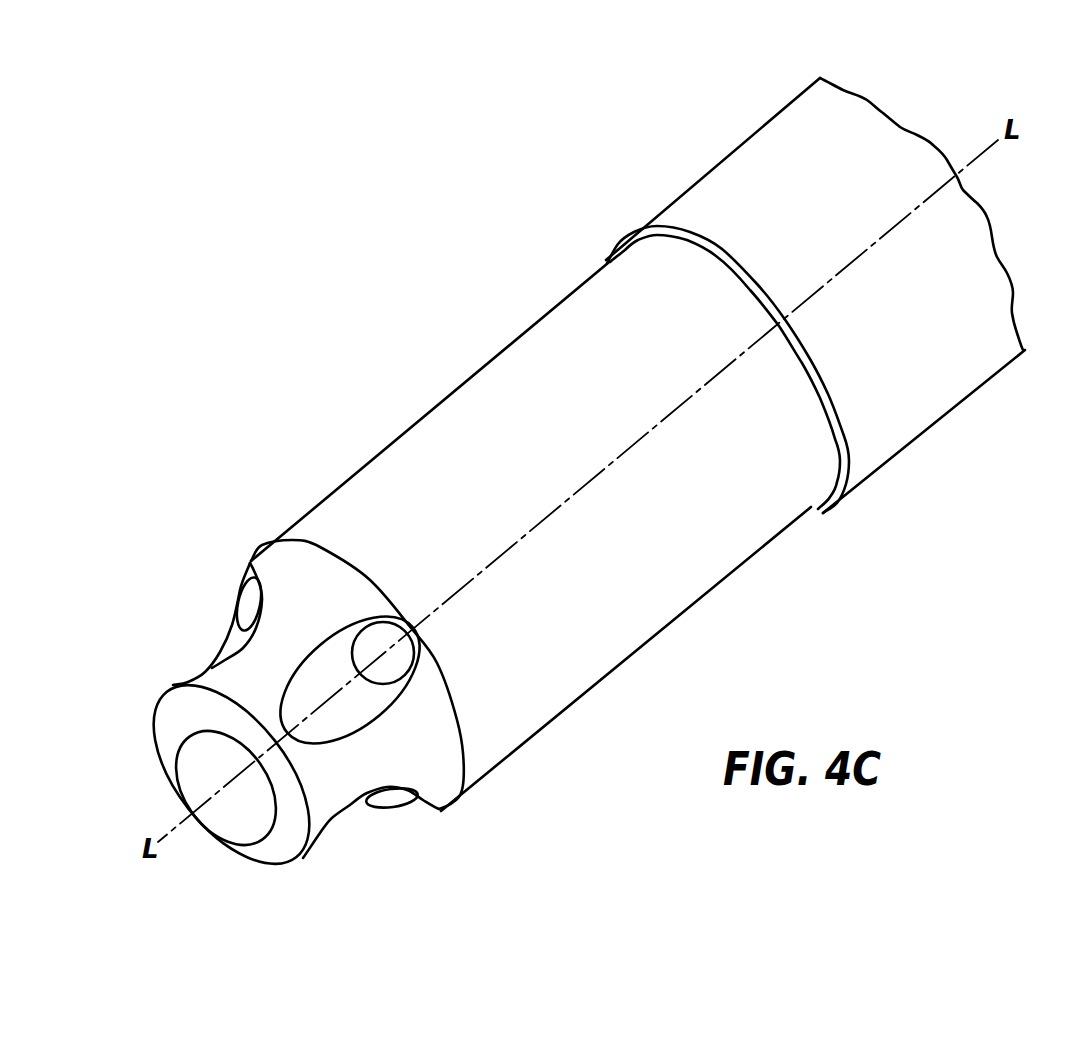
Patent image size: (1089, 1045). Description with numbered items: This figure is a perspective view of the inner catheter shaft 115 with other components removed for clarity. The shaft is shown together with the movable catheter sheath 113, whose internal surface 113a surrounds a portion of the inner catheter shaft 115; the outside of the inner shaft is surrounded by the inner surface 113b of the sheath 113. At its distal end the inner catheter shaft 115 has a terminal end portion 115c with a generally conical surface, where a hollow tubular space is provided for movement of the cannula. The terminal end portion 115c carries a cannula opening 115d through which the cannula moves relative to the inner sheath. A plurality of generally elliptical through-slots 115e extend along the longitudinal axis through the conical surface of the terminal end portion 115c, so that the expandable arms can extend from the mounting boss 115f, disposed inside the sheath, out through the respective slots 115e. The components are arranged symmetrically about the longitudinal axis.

The movable catheter sheath 113 is at (682, 194).
The internal surface of the movable catheter sheath 113a is at (909, 441).
The inner surface of the sheath 113b is at (816, 515).
The inner catheter shaft 115 is at (417, 416).
The terminal end portion 115c is at (211, 682).
The cannula opening 115d is at (232, 811).
The slots 115e is at (234, 639).
The mounting boss 115f is at (378, 646).